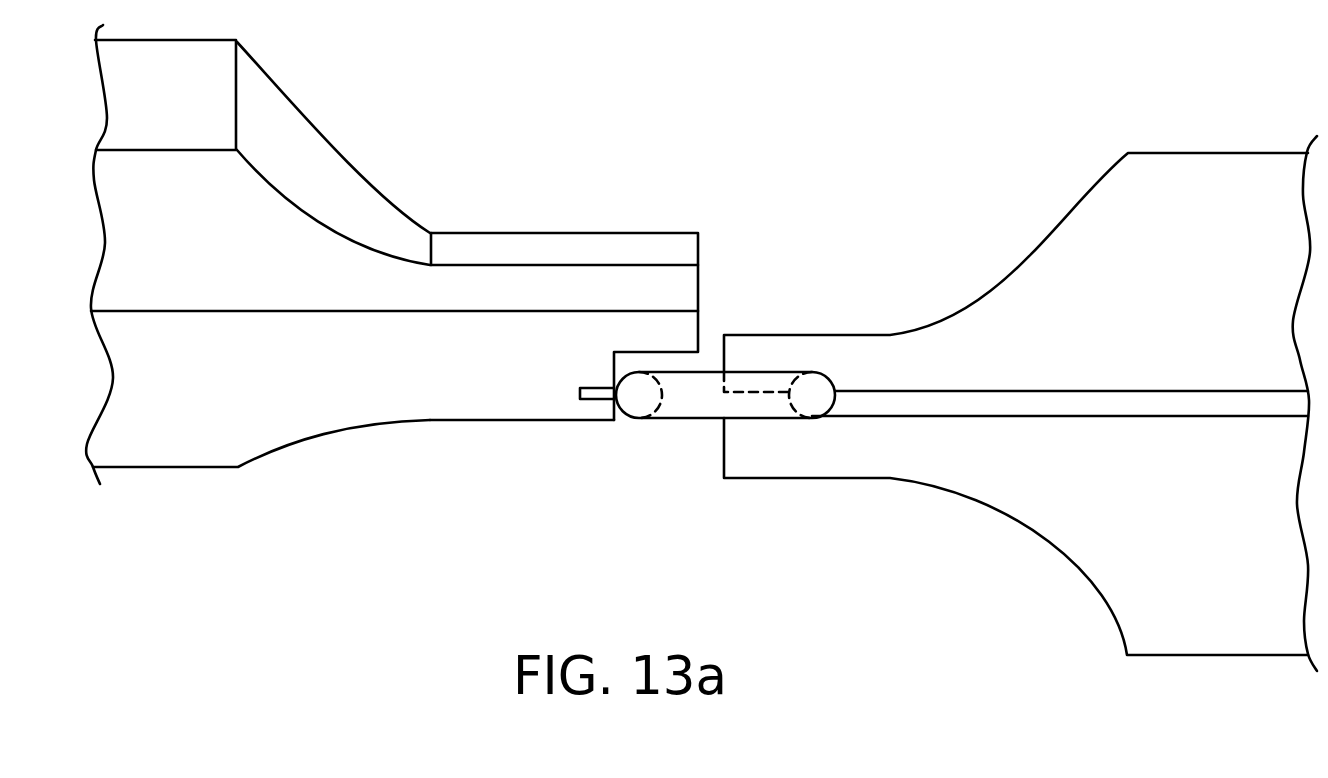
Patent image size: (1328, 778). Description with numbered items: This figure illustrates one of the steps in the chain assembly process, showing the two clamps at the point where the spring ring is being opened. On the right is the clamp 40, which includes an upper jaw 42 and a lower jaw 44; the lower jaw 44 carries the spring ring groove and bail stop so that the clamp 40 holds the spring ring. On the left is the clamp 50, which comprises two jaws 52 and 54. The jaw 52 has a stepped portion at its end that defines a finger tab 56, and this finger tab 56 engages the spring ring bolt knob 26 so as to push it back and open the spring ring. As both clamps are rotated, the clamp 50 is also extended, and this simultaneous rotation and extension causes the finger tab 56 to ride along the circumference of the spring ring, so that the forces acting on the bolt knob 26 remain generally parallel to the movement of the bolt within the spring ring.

The clamp 50 is at (392, 257).
The jaw 54 is at (202, 269).
The jaw 52 is at (227, 409).
The finger tab 56 is at (530, 398).
The spring ring bolt knob 26 is at (589, 400).
The clamp 40 is at (1020, 403).
The lower jaw 44 is at (1197, 304).
The upper jaw 42 is at (1185, 534).